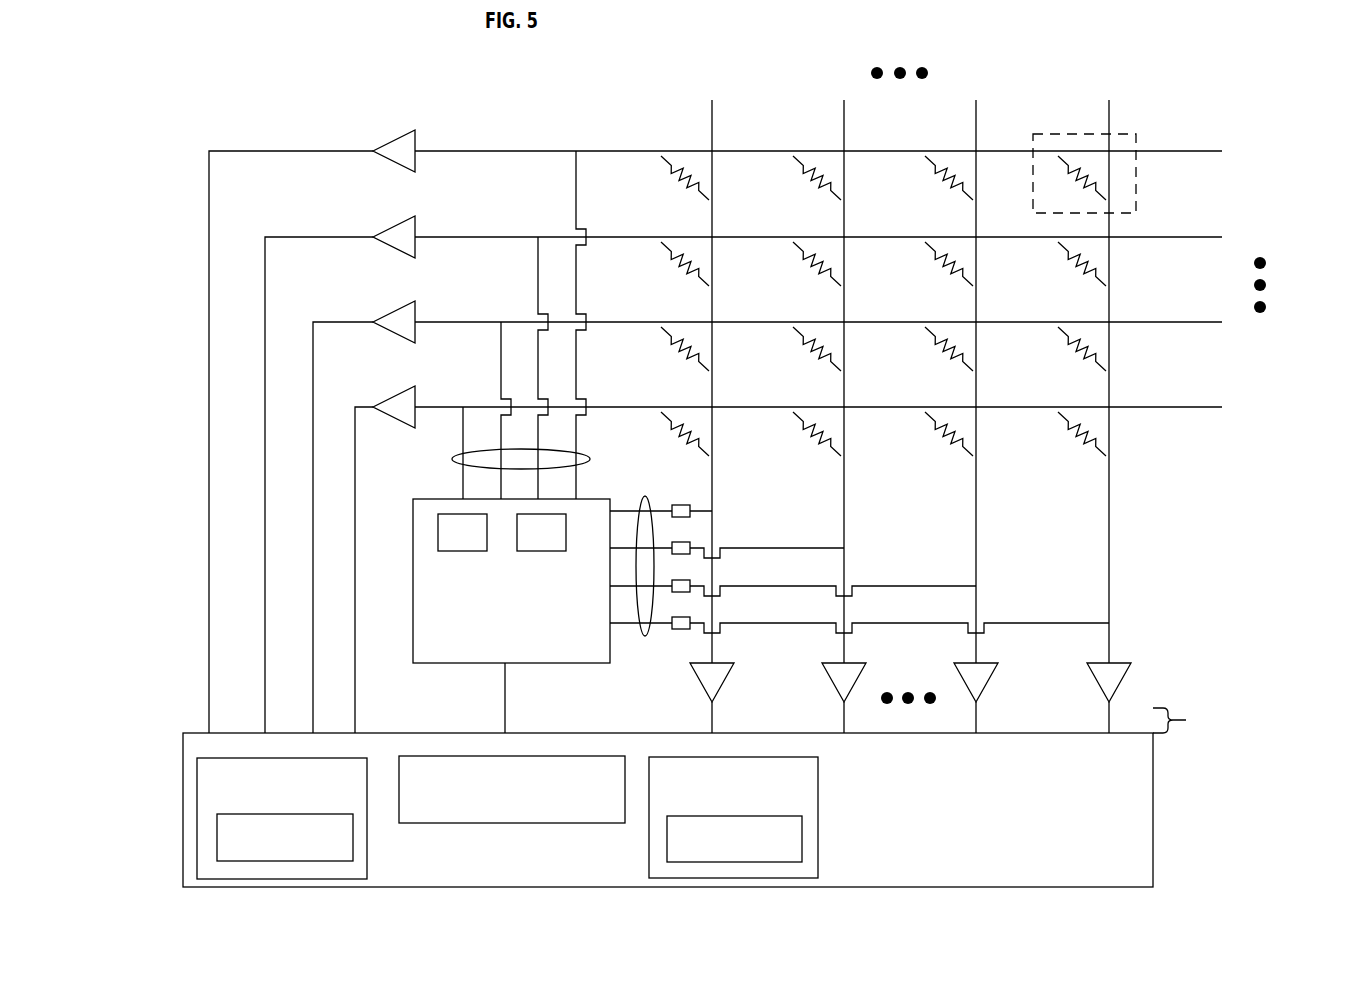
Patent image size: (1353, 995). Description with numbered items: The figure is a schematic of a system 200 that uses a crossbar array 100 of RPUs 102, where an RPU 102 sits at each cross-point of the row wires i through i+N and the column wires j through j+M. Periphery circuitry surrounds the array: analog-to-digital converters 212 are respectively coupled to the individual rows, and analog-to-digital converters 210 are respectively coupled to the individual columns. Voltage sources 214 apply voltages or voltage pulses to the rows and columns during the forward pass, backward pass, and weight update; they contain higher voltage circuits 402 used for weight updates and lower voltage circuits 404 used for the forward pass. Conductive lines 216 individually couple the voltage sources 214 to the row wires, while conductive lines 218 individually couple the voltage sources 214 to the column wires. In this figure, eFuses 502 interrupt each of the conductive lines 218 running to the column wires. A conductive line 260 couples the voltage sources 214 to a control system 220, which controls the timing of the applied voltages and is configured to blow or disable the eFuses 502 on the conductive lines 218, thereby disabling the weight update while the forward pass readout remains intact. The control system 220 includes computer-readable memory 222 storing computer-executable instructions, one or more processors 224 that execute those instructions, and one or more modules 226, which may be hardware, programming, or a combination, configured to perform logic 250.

The system 200 is at (601, 64).
The crossbar array 100 is at (851, 362).
The RPU 102 is at (1136, 165).
The analog-to-digital converters 212 is at (428, 118).
The analog-to-digital converters 210 is at (1153, 650).
The voltage sources 214 is at (511, 581).
The higher voltage circuits 402 is at (462, 532).
The lower voltage circuits 404 is at (541, 532).
The conductive lines 216 is at (455, 458).
The conductive lines 218 is at (645, 636).
The eFuses 502 is at (694, 500).
The conductive line 260 is at (505, 683).
The control system 220 is at (668, 810).
The memory 222 is at (282, 818).
The processors 224 is at (512, 789).
The modules 226 is at (733, 817).
The logic 250 is at (509, 838).